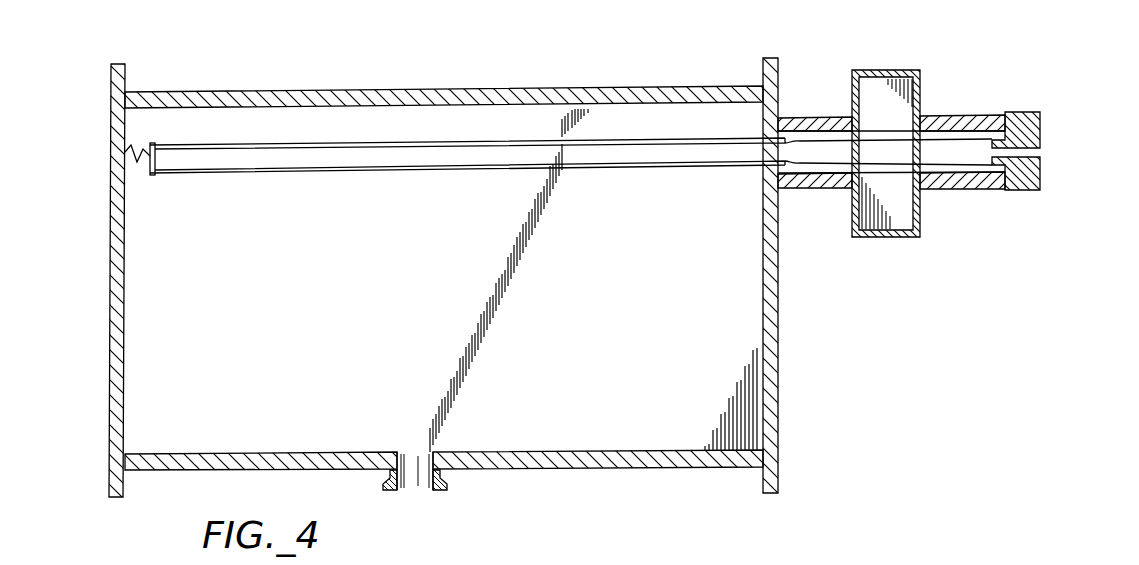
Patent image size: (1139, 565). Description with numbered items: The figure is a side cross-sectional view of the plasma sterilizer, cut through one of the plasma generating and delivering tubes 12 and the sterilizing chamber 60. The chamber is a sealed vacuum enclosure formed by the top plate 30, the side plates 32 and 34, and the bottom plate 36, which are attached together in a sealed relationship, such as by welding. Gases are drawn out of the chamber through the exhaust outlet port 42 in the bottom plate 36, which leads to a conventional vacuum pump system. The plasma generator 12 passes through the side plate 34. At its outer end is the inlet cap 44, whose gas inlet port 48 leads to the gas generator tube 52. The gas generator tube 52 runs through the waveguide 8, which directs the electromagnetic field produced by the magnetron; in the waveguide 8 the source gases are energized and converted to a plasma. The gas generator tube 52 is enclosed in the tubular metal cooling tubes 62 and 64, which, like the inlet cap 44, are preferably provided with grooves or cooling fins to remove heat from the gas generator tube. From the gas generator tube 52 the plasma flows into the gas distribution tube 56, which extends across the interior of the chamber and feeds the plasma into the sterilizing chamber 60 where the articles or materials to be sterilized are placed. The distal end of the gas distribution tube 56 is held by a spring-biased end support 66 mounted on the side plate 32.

The waveguide 8 is at (899, 70).
The plasma generating and delivering tube 12 is at (944, 132).
The top plate 30 is at (386, 91).
The side plate 32 is at (110, 191).
The side plate 34 is at (788, 275).
The bottom plate 36 is at (316, 453).
The exhaust outlet port 42 is at (440, 488).
The inlet cap 44 is at (1010, 191).
The gas inlet port 48 is at (1042, 152).
The gas generator tube 52 is at (903, 112).
The gas distribution tube 56 is at (455, 174).
The sterilizing chamber 60 is at (738, 284).
The cooling tube 62 is at (975, 114).
The cooling tube 64 is at (836, 196).
The spring-biased end support 66 is at (137, 163).